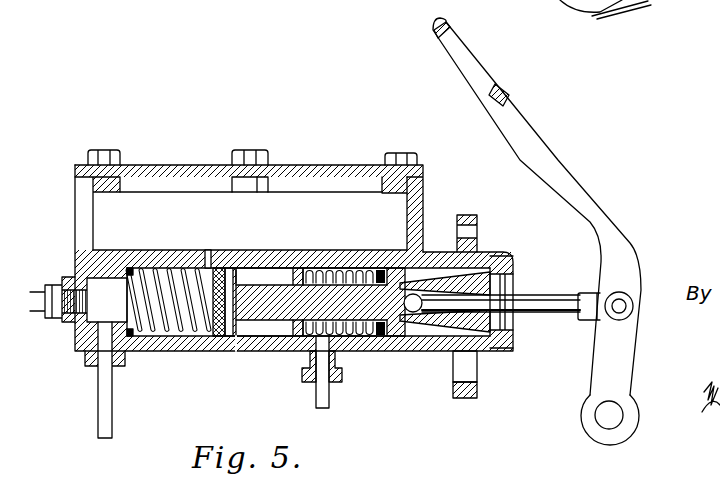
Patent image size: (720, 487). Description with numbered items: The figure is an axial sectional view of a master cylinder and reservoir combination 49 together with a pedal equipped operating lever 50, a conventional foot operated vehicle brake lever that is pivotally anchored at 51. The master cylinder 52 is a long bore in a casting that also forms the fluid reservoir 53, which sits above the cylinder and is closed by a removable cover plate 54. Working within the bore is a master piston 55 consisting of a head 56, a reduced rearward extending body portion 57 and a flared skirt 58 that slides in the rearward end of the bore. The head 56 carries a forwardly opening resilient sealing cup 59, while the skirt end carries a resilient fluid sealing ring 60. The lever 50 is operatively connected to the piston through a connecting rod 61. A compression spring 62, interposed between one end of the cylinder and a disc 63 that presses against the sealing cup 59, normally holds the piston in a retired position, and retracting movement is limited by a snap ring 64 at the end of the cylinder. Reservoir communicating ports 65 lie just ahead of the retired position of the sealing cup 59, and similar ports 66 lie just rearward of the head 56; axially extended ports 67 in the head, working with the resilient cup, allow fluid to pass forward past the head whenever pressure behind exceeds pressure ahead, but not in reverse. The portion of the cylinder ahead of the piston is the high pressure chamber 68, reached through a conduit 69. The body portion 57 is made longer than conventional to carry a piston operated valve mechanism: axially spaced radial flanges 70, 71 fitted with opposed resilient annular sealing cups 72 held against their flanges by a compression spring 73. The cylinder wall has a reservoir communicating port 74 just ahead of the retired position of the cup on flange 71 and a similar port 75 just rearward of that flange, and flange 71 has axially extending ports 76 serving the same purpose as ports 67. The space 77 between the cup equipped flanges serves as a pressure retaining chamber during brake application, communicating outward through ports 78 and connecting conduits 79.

The master cylinder and reservoir combination 49 is at (176, 363).
The pedal equipped operating lever 50 is at (569, 151).
The pivot anchor 51 is at (596, 413).
The master cylinder 52 is at (178, 270).
The fluid reservoir 53 is at (153, 198).
The cover plate 54 is at (295, 170).
The master piston 55 is at (240, 340).
The head 56 is at (224, 340).
The reduced body portion 57 is at (283, 320).
The flared skirt 58 is at (446, 340).
The sealing cup 59 is at (214, 337).
The fluid sealing ring 60 is at (480, 342).
The connecting rod 61 is at (560, 314).
The compression spring 62 is at (158, 275).
The disc 63 is at (158, 351).
The snap ring 64 is at (497, 287).
The reservoir communicating ports 65 is at (215, 262).
The reservoir communicating ports 66 is at (237, 262).
The axially extended ports 67 is at (283, 266).
The high pressure chamber 68 is at (135, 268).
The conduit 69 is at (102, 412).
The radial valve flange 70 is at (293, 277).
The radial valve flange 71 is at (399, 278).
The annular sealing cups 72 is at (375, 340).
The compression spring 73 is at (365, 270).
The reservoir communicating port 74 is at (404, 232).
The reservoir communicating port 75 is at (424, 222).
The axially extending ports 76 is at (399, 332).
The pressure retaining chamber 77 is at (350, 330).
The ports 78 is at (314, 380).
The connecting conduits 79 is at (325, 407).